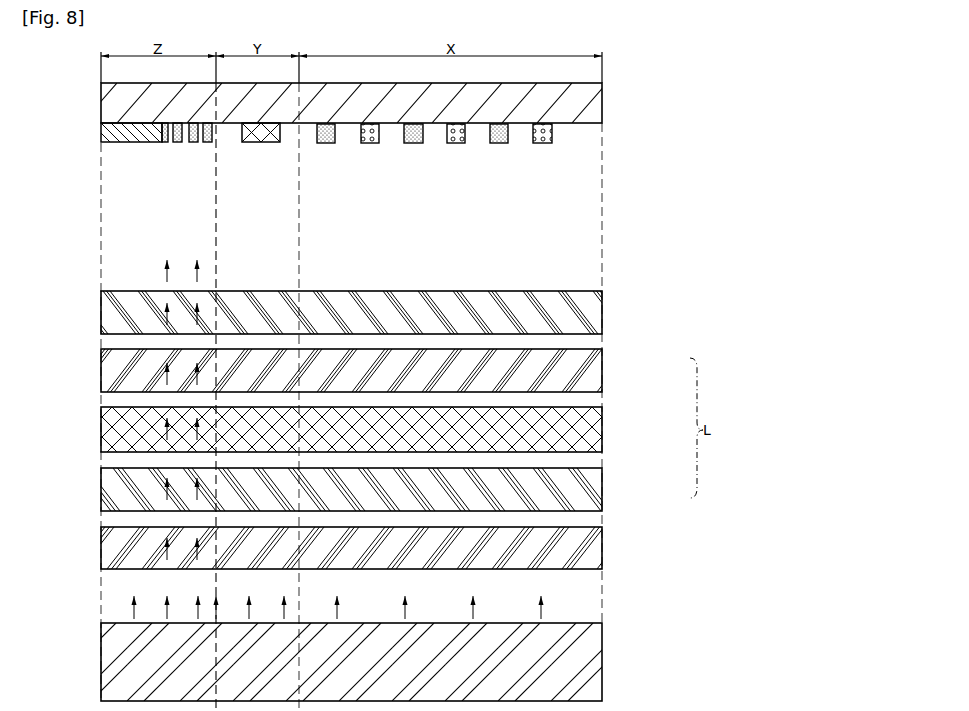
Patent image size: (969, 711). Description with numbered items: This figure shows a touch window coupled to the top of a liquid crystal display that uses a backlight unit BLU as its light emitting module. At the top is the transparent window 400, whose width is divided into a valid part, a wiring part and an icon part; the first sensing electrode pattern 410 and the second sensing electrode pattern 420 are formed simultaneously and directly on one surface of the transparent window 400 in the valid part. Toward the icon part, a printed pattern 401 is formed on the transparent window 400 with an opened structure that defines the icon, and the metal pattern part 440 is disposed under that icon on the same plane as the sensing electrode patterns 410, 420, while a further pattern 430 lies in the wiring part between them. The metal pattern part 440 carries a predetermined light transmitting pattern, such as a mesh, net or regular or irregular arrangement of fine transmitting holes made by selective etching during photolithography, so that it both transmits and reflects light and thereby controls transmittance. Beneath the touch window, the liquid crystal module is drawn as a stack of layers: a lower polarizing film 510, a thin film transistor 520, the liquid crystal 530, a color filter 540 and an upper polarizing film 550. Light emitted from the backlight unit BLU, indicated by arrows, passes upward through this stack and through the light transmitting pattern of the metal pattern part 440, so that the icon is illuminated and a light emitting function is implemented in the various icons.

The transparent window 400 is at (596, 106).
The printed pattern 401 is at (101, 134).
The first sensing electrode pattern 410 is at (551, 144).
The second sensing electrode pattern 420 is at (498, 144).
The third pattern 430 is at (266, 146).
The metal pattern part 440 is at (187, 146).
The polarizing film 510 is at (603, 545).
The thin film transistor 520 is at (603, 485).
The liquid crystal 530 is at (603, 430).
The color filter 540 is at (603, 372).
The polarizing film 550 is at (603, 315).
The backlight unit BLU is at (595, 660).